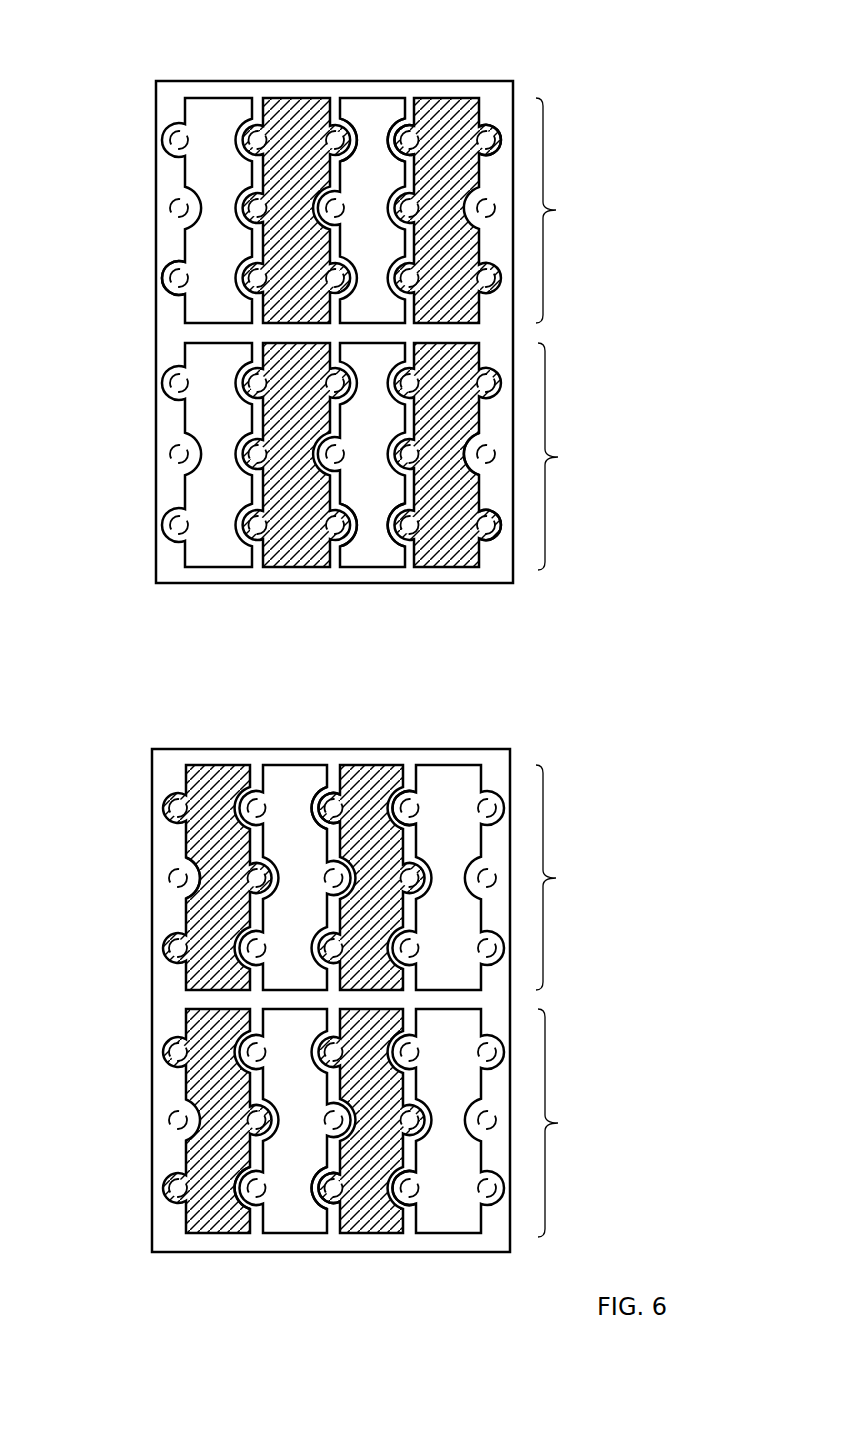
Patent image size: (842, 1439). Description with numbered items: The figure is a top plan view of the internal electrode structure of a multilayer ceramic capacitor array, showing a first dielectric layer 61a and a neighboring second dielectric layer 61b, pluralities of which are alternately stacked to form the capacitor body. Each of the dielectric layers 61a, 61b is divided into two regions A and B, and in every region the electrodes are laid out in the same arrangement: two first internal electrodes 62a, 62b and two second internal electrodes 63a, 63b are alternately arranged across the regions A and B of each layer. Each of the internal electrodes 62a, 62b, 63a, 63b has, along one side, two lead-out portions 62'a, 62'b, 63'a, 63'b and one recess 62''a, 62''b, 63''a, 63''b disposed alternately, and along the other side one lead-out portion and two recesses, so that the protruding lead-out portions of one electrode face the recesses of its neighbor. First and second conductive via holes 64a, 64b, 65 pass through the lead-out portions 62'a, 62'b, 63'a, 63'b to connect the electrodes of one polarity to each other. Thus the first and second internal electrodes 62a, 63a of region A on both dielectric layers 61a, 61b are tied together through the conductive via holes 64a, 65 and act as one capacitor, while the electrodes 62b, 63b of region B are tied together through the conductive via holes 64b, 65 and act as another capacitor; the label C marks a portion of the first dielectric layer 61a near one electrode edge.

The first dielectric layer 61a is at (155, 113).
The second dielectric layer 61b is at (185, 1255).
The first internal electrode 62a is at (457, 100).
The first internal electrode 62b is at (457, 570).
The lead-out portion 62'a is at (439, 430).
The lead-out portion 62'b is at (434, 910).
The recess 62''a is at (401, 512).
The recess 62''b is at (405, 883).
The second internal electrode 63a is at (363, 100).
The second internal electrode 63b is at (360, 570).
The lead-out portion 63'a is at (421, 415).
The lead-out portion 63'b is at (408, 907).
The recess 63''a is at (302, 429).
The recess 63''b is at (286, 901).
The first conductive via hole 64a is at (165, 141).
The first conductive via hole 64b is at (168, 383).
The second conductive via hole 65 is at (160, 209).
The region A is at (565, 544).
The region B is at (563, 790).
The protruding portion C is at (182, 298).